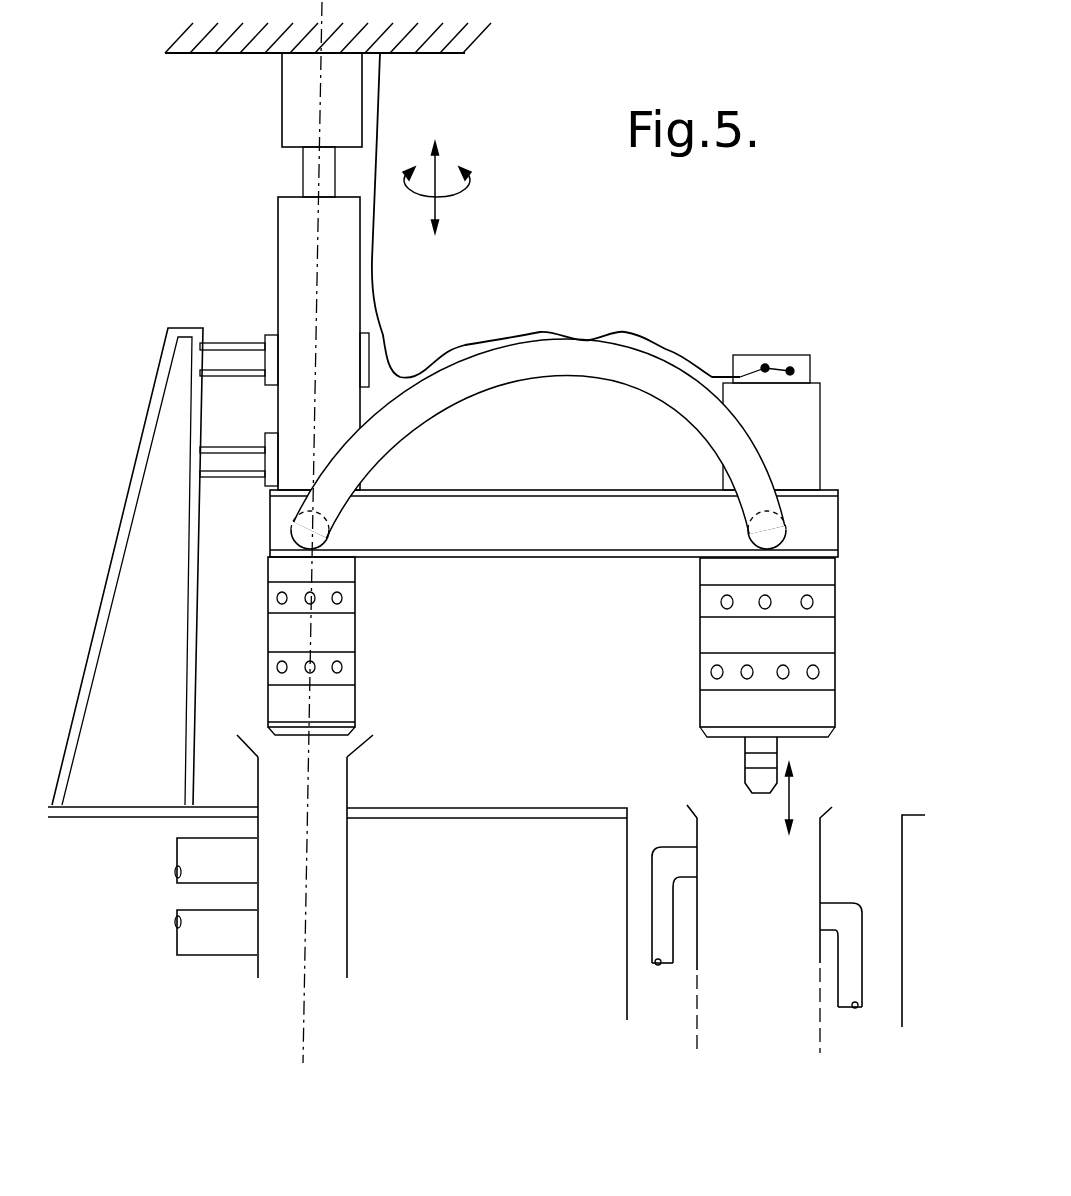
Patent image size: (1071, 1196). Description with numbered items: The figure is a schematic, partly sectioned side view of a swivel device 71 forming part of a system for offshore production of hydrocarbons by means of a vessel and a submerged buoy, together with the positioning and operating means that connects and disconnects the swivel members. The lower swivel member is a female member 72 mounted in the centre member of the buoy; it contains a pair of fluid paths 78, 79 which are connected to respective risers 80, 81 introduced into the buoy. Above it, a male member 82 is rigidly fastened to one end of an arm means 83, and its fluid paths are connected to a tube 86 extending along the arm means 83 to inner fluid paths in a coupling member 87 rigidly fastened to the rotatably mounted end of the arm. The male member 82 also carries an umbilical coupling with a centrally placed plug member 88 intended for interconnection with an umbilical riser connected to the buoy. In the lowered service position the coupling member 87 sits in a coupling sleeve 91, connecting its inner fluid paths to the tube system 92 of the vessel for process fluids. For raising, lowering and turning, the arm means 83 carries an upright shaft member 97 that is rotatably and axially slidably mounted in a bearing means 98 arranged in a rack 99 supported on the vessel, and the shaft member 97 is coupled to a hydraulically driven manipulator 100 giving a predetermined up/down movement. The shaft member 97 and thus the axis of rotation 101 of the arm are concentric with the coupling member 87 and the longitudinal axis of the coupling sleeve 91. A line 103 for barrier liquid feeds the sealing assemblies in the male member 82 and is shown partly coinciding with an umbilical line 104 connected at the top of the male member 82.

The swivel device 71 is at (833, 772).
The female member 72 is at (823, 835).
The fluid path 78 is at (692, 847).
The fluid path 79 is at (823, 900).
The riser 80 is at (660, 893).
The riser 81 is at (853, 995).
The male member 82 is at (838, 625).
The arm means 83 is at (556, 540).
The tube 86 is at (511, 381).
The coupling member 87 is at (340, 634).
The plug member 88 is at (745, 757).
The coupling sleeve 91 is at (348, 790).
The tube system 92 is at (203, 868).
The shaft member 97 is at (278, 245).
The bearing means 98 is at (265, 388).
The rack 99 is at (137, 457).
The hydraulically driven manipulator 100 is at (283, 104).
The axis of rotation 101 is at (313, 298).
The line for barrier liquid 103 is at (383, 306).
The umbilical line 104 is at (752, 370).